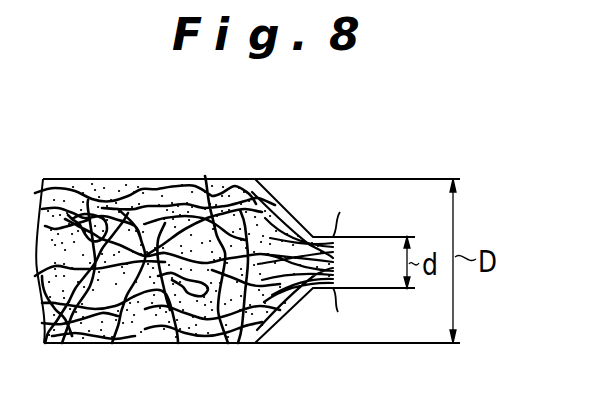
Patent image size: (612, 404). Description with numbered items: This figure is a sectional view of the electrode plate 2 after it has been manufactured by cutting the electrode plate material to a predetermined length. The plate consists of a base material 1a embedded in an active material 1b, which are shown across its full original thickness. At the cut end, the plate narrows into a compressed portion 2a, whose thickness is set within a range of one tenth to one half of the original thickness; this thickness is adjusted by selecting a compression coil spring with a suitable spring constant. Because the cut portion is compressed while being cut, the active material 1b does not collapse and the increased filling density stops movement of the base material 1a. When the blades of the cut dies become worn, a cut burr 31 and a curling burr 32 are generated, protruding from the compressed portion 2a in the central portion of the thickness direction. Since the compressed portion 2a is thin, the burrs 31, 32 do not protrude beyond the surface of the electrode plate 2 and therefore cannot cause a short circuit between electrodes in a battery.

The base material 1a is at (146, 200).
The active material 1b is at (88, 200).
The electrode plate 2 is at (208, 179).
The compressed portion 2a is at (313, 290).
The cut burr 31 is at (333, 305).
The curling burr 32 is at (337, 216).